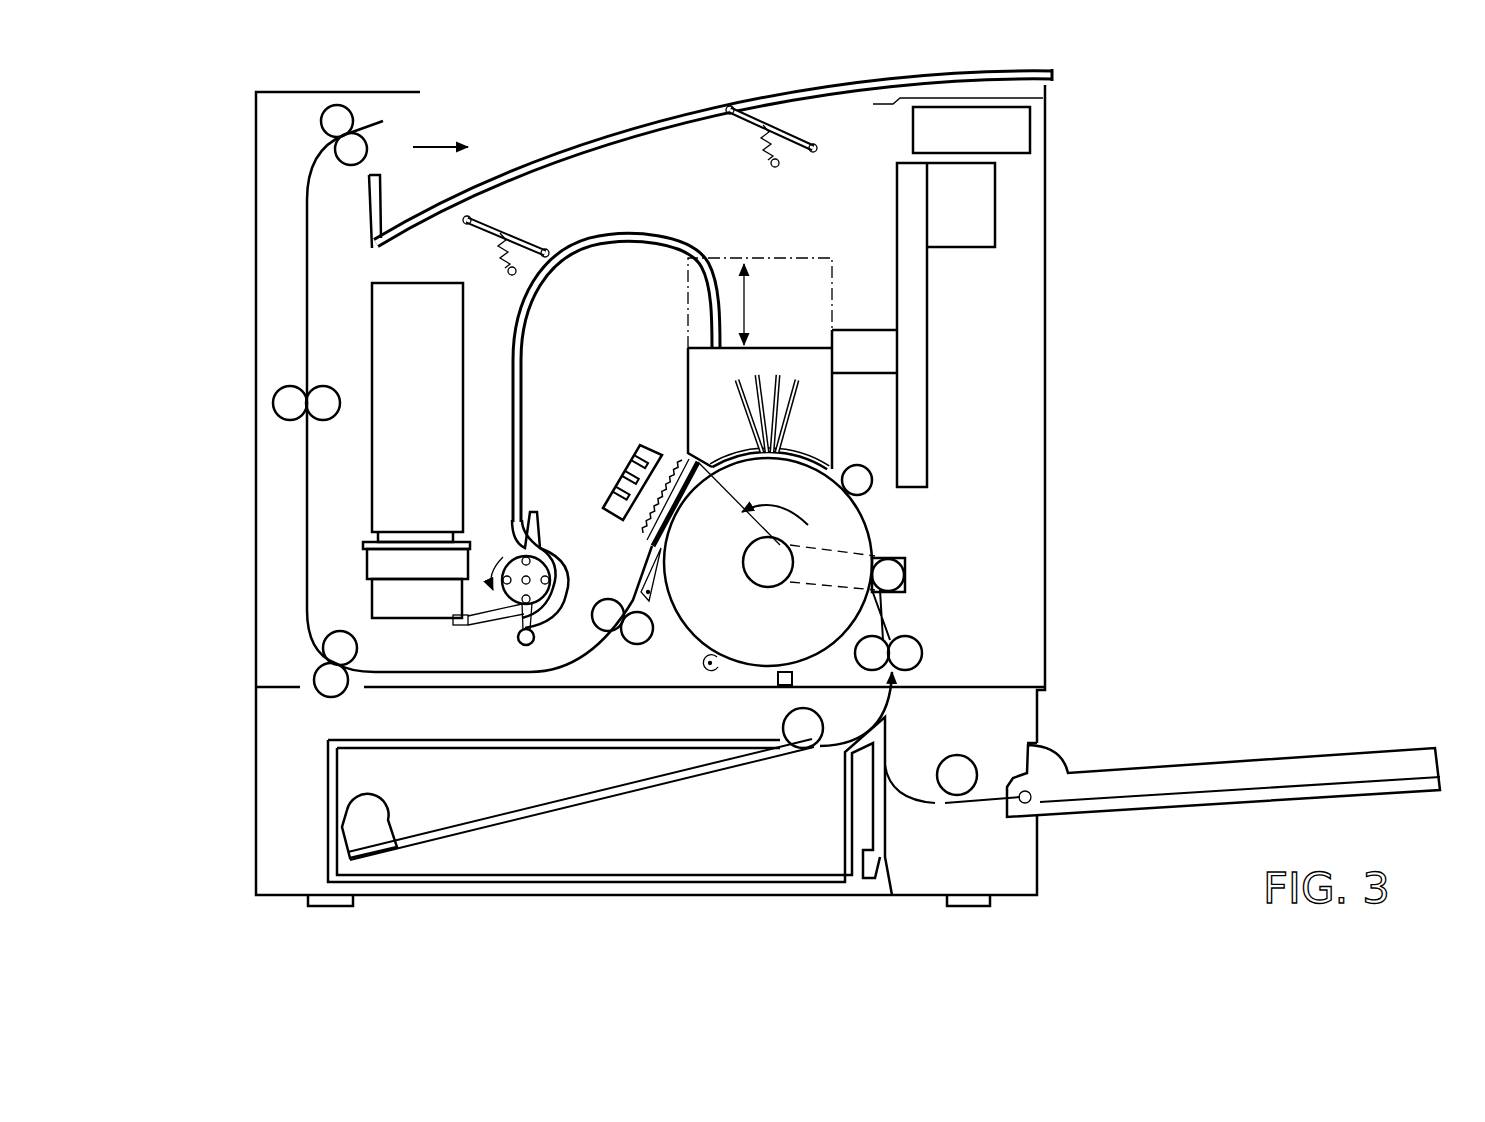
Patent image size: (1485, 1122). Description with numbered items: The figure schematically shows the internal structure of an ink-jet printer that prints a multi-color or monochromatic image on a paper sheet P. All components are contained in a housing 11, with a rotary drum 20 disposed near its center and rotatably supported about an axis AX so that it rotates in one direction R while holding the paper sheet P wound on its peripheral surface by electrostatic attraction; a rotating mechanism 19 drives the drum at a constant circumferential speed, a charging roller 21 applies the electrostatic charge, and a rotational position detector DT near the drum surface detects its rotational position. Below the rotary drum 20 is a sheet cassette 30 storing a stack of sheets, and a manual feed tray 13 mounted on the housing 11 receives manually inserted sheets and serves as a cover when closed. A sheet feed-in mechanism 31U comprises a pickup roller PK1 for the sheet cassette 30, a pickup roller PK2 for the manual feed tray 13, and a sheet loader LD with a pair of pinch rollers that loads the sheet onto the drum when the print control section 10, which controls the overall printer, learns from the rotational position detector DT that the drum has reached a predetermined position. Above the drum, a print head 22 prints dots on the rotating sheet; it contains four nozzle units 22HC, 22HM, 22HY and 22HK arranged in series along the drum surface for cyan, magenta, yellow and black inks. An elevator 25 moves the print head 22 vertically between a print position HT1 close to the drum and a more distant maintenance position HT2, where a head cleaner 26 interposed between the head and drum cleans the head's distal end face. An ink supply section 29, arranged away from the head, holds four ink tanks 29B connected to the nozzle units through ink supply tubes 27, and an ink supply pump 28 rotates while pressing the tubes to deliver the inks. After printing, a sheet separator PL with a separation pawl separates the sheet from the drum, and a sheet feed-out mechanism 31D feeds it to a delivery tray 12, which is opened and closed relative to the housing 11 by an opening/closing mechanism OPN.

The print control section 10 is at (1015, 140).
The housing 11 is at (1033, 353).
The delivery tray 12 is at (603, 140).
The manual feed tray 13 is at (1177, 773).
The rotating mechanism 19 is at (895, 572).
The rotary drum 20 is at (687, 618).
The charging roller 21 is at (858, 485).
The print head 22 is at (808, 396).
The nozzle unit 22HY is at (757, 375).
The nozzle unit 22HM is at (778, 375).
The nozzle unit 22HC is at (790, 430).
The nozzle unit 22HK is at (737, 382).
The elevator 25 is at (915, 287).
The head cleaner 26 is at (681, 463).
The ink supply tubes 27 is at (523, 417).
The ink supply pump 28 is at (503, 607).
The ink supply section 29 is at (375, 560).
The ink tanks 29B is at (408, 450).
The sheet cassette 30 is at (765, 850).
The sheet feed-out mechanism 31D is at (292, 432).
The sheet feed-in mechanism 31U is at (915, 620).
The opening/closing mechanism OPN is at (462, 255).
The print position HT1 is at (684, 348).
The maintenance position HT2 is at (684, 262).
The rotation direction R is at (775, 493).
The axis AX is at (780, 573).
The sheet separator PL is at (655, 590).
The rotational position detector DT is at (795, 678).
The sheet loader LD is at (890, 645).
The pickup roller PK1 is at (800, 723).
The pickup roller PK2 is at (978, 760).
The paper sheet P is at (685, 775).